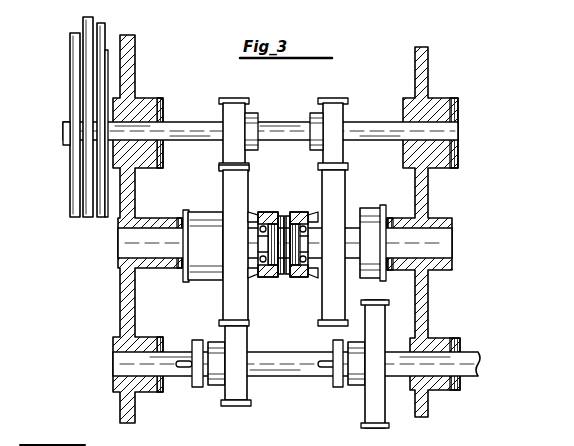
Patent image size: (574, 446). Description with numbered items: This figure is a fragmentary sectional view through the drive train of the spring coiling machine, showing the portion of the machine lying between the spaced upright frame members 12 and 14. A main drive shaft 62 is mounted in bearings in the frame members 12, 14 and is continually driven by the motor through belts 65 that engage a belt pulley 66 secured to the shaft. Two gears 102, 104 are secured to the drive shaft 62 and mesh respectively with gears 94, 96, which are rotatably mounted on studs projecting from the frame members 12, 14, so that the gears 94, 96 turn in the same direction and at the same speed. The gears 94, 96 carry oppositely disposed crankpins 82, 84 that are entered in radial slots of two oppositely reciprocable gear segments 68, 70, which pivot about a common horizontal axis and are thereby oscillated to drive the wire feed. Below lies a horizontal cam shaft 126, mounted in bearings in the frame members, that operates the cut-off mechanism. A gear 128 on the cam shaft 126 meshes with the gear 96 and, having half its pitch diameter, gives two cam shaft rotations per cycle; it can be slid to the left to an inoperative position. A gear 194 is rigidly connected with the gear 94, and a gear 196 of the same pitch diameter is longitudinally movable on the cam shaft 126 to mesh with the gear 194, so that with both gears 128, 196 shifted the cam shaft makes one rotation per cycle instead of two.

The frame member 12 is at (428, 189).
The frame member 14 is at (120, 297).
The main drive shaft 62 is at (202, 122).
The belts 65 is at (70, 33).
The belt pulley 66 is at (70, 180).
The first gear segment 68 is at (296, 208).
The second gear segment 70 is at (276, 208).
The crankpin 82 is at (287, 262).
The crankpin 84 is at (280, 278).
The gear 94 is at (322, 317).
The gear 96 is at (223, 304).
The gear 102 is at (328, 98).
The gear 104 is at (234, 98).
The cam shaft 126 is at (283, 372).
The gear 128 is at (231, 408).
The gear 194 is at (362, 290).
The gear 196 is at (364, 421).